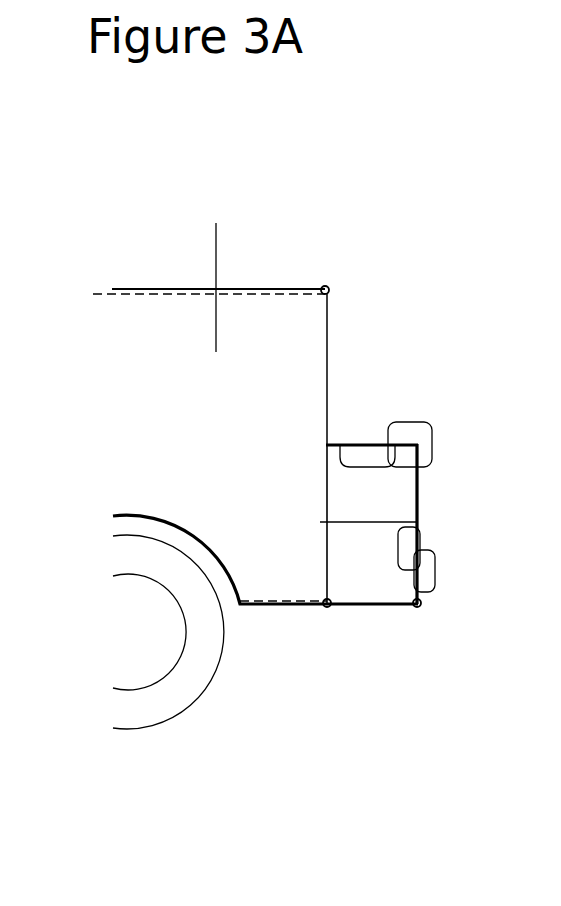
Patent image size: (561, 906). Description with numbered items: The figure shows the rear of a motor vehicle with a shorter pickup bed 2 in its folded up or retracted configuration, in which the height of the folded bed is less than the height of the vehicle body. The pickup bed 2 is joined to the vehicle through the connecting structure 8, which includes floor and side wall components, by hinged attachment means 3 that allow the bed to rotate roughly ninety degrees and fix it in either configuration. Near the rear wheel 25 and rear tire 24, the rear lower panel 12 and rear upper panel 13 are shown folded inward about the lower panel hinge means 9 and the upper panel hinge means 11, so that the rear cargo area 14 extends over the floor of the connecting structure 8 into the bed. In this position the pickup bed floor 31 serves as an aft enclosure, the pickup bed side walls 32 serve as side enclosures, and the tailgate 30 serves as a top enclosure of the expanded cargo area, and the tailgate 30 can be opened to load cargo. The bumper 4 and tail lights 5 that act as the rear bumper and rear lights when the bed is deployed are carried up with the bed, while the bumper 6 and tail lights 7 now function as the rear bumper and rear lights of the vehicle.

The pickup bed 2 is at (400, 513).
The hinged attachment means 3 is at (416, 607).
The bumper 4 is at (420, 432).
The tail lights 5 is at (365, 455).
The bumper 6 is at (428, 570).
The tail lights 7 is at (410, 542).
The connecting structure 8 is at (357, 575).
The lower panel hinge means 9 is at (326, 607).
The upper panel hinge means 11 is at (326, 286).
The rear lower panel 12 is at (268, 607).
The rear upper panel 13 is at (185, 292).
The rear cargo area 14 is at (220, 272).
The rear tire 24 is at (130, 712).
The rear wheel 25 is at (150, 668).
The tailgate 30 is at (332, 443).
The pickup bed floor 31 is at (418, 490).
The pickup bed side walls 32 is at (390, 492).